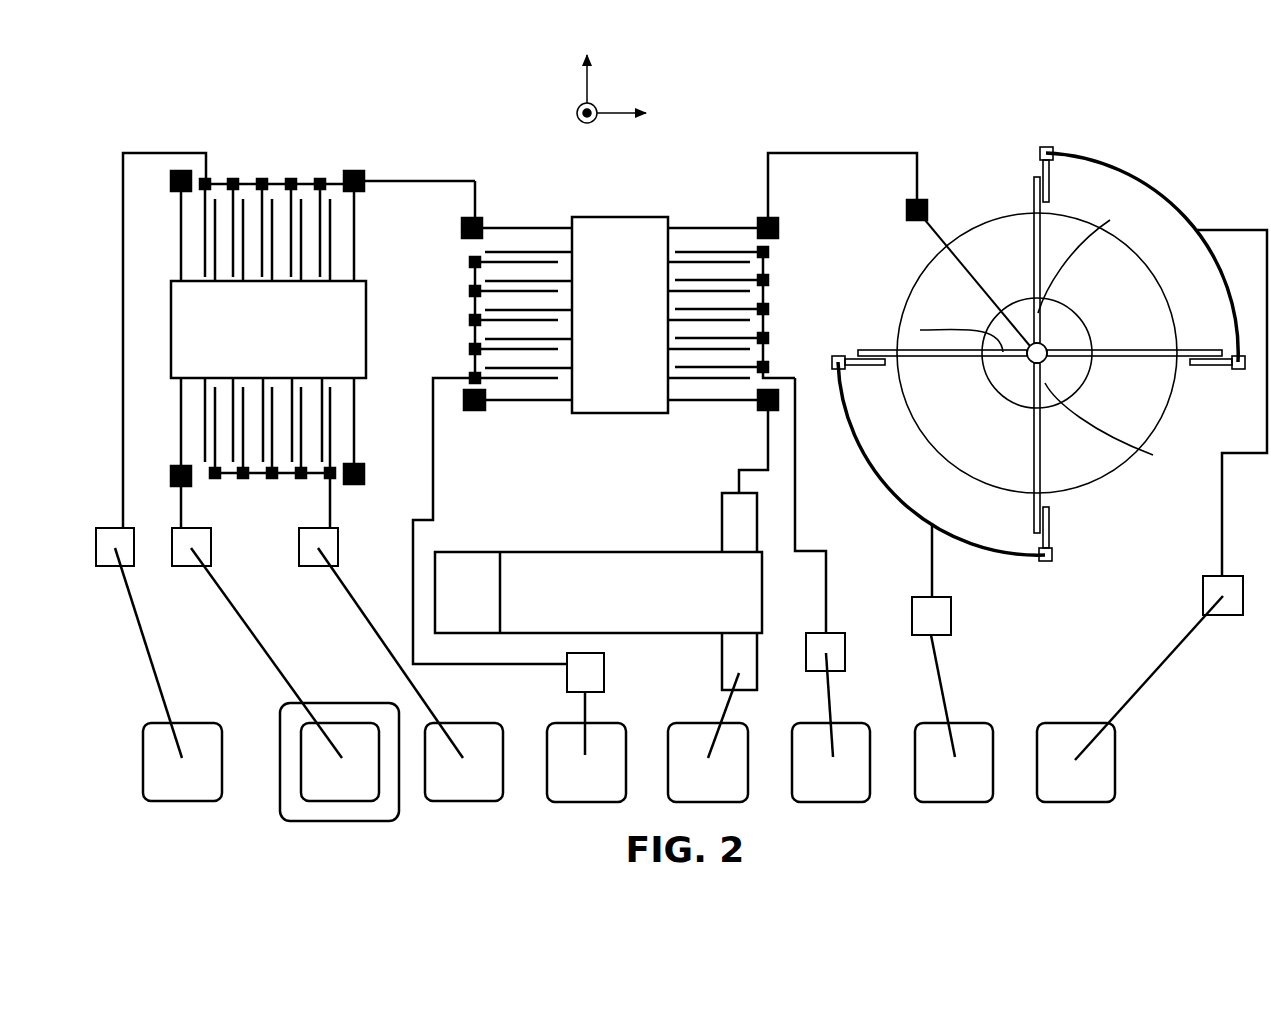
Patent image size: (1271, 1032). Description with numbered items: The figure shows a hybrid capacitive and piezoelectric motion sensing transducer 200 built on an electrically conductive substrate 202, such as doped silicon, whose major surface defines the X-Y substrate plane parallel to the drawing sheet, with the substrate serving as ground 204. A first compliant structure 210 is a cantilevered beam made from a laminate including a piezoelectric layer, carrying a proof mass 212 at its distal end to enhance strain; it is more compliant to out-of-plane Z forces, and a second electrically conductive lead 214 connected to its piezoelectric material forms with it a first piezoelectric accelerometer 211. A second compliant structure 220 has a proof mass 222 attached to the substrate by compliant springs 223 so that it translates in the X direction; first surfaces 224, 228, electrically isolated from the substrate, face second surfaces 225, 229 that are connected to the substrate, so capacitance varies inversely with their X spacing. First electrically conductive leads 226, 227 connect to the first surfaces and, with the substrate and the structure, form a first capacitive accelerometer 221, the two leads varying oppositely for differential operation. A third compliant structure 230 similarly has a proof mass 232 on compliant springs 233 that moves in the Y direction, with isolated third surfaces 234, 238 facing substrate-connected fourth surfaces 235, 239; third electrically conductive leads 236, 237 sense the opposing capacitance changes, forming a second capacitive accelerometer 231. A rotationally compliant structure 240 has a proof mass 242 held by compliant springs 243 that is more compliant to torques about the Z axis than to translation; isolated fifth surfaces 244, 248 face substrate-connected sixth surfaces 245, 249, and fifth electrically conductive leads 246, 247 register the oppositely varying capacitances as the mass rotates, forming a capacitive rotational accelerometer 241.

The hybrid capacitive and piezoelectric motion sensing transducer 200 is at (750, 96).
The electrically conductive substrate 202 is at (570, 489).
The ground 204 is at (255, 643).
The first compliant structure 210 is at (627, 552).
The first piezoelectric accelerometer 211 is at (672, 548).
The proof mass 212 is at (466, 552).
The second electrically conductive lead 214 is at (730, 696).
The second compliant structure 220 is at (384, 278).
The first capacitive accelerometer 221 is at (384, 338).
The proof mass 222 is at (268, 329).
The compliant springs 223 is at (181, 255).
The first surfaces 224 is at (237, 196).
The second surfaces 225 is at (241, 222).
The first electrically conductive lead 226 is at (140, 643).
The first electrically conductive lead 227 is at (380, 643).
The first surfaces 228 is at (272, 450).
The second surfaces 229 is at (265, 430).
The third compliant structure 230 is at (620, 206).
The second capacitive accelerometer 231 is at (615, 418).
The proof mass 232 is at (620, 315).
The compliant springs 233 is at (712, 226).
The third surfaces 234 is at (502, 288).
The fourth surfaces 235 is at (518, 280).
The third electrically conductive lead 236 is at (583, 701).
The third electrically conductive lead 237 is at (830, 688).
The third surfaces 238 is at (733, 312).
The fourth surfaces 239 is at (713, 317).
The rotationally compliant structure 240 is at (985, 193).
The capacitive rotational accelerometer 241 is at (1114, 480).
The proof mass 242 is at (1037, 382).
The compliant springs 243 is at (1110, 220).
The fifth surfaces 244 is at (1040, 552).
The sixth surfaces 245 is at (1046, 500).
The fifth electrically conductive lead 246 is at (942, 670).
The fifth electrically conductive lead 247 is at (1143, 688).
The fifth surfaces 248 is at (1222, 352).
The sixth surfaces 249 is at (1183, 365).